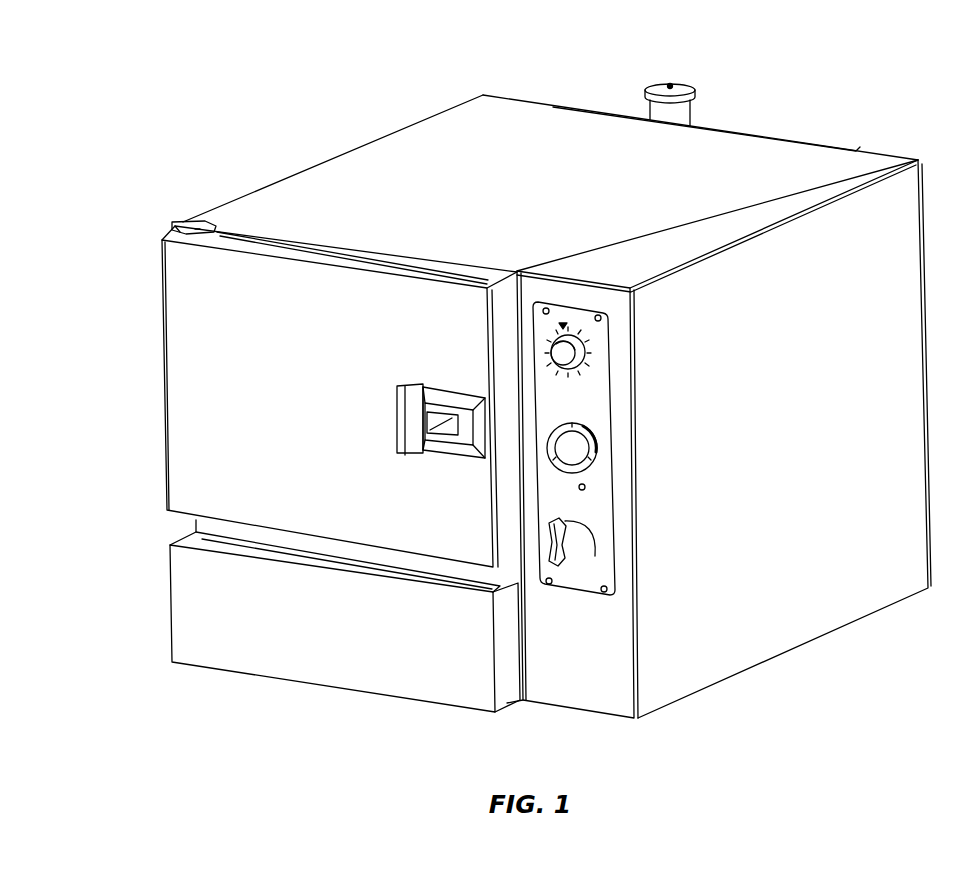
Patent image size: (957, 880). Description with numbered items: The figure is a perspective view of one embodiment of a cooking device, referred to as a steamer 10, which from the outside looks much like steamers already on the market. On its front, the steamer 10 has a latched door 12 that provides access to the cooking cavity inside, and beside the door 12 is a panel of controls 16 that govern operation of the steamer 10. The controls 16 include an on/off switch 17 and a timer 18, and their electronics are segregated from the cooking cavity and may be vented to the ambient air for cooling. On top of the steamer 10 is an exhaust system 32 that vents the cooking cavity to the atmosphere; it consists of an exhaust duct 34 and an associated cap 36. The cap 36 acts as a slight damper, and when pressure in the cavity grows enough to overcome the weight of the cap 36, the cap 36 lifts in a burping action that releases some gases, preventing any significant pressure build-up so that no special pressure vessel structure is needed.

The steamer 10 is at (303, 106).
The latched door 12 is at (187, 403).
The controls 16 is at (611, 447).
The on/off switch 17 is at (566, 534).
The timer 18 is at (587, 353).
The exhaust system 32 is at (685, 68).
The exhaust duct 34 is at (681, 113).
The cap 36 is at (656, 86).